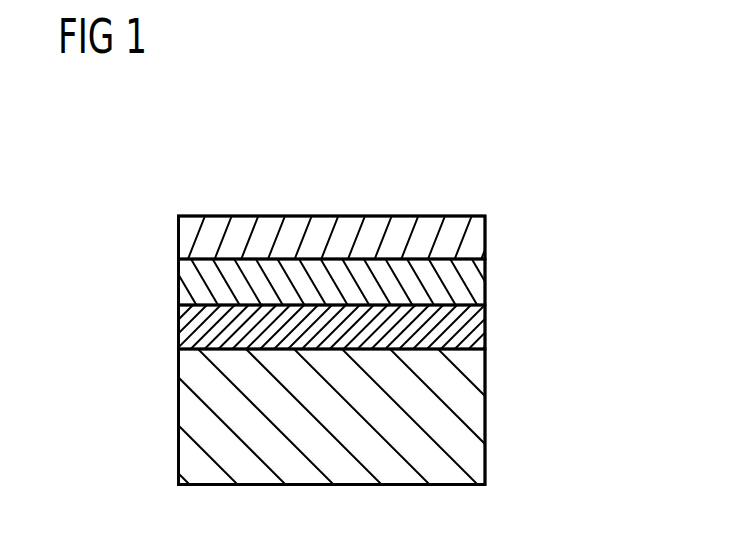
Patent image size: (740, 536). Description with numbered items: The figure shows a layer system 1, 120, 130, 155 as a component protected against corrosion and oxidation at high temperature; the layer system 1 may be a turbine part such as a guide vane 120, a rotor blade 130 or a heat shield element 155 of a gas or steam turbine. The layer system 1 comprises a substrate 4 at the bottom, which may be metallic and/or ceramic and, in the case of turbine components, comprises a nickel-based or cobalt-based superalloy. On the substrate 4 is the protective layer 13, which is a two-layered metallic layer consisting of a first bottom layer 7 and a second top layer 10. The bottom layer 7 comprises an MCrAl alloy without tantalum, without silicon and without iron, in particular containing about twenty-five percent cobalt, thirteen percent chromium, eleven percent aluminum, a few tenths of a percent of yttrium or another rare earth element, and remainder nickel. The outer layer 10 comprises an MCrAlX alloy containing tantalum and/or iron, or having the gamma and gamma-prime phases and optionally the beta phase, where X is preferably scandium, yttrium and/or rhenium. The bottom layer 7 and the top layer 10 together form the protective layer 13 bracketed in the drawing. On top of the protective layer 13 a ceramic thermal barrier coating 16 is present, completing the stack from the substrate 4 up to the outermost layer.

The layer system 1 is at (517, 78).
The guide vane 120 is at (336, 262).
The rotor blade 130 is at (336, 262).
The heat shield element 155 is at (336, 262).
The ceramic thermal barrier coating 16 is at (198, 236).
The second top layer 10 is at (195, 282).
The first bottom layer 7 is at (195, 324).
The substrate 4 is at (193, 414).
The protective layer 13 is at (493, 261).